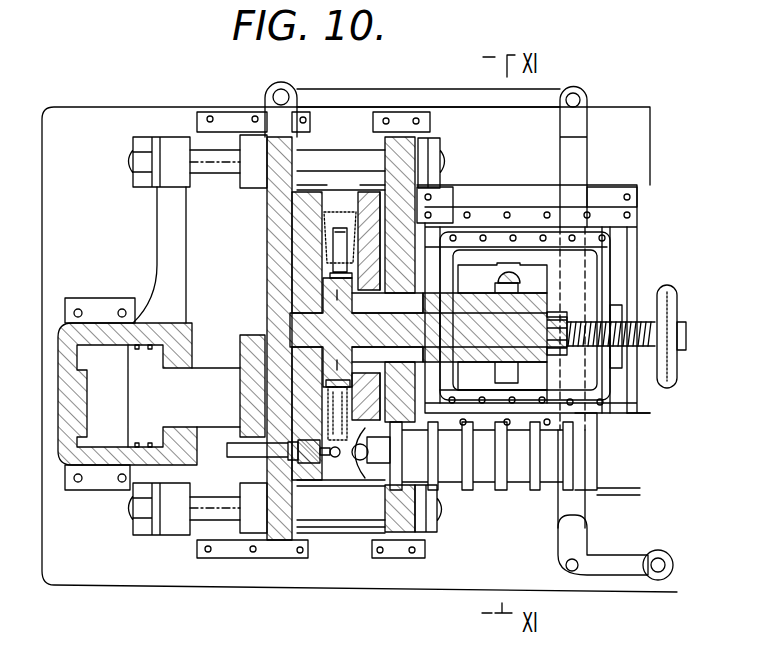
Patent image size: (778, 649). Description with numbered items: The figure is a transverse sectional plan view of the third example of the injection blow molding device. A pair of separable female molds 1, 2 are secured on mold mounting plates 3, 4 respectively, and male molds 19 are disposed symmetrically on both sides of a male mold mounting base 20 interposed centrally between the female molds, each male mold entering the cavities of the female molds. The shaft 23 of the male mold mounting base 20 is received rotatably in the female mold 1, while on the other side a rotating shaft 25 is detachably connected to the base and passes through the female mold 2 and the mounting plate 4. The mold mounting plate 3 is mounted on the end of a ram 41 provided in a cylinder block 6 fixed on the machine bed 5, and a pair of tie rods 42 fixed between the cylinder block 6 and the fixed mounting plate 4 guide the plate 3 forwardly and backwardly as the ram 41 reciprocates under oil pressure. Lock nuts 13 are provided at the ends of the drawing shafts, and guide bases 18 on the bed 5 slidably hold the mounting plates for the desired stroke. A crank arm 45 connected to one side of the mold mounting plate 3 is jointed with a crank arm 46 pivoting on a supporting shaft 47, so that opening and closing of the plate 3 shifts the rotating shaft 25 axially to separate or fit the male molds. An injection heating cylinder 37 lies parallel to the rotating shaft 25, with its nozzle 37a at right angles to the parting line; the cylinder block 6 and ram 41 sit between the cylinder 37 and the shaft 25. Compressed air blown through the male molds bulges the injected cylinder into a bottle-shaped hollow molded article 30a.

The separable female mold 1 is at (318, 197).
The separable female mold 2 is at (362, 197).
The mold mounting plate 3 is at (280, 140).
The mold mounting plate 4 is at (440, 167).
The machine bed 5 is at (53, 236).
The cylinder block 6 is at (67, 414).
The lock nuts 13 is at (143, 144).
The guide bases 18 is at (218, 115).
The male molds 19 is at (330, 250).
The male mold mounting base 20 is at (292, 290).
The shaft 23 is at (310, 332).
The rotating shaft 25 is at (520, 330).
The hollow molded article 30a is at (322, 223).
The injection heating cylinder 37 is at (483, 465).
The nozzle 37a is at (363, 460).
The ram 41 is at (217, 417).
The tie rods 42 is at (343, 155).
The crank arm 45 is at (400, 93).
The crank arm 46 is at (580, 153).
The supporting shaft 47 is at (573, 573).